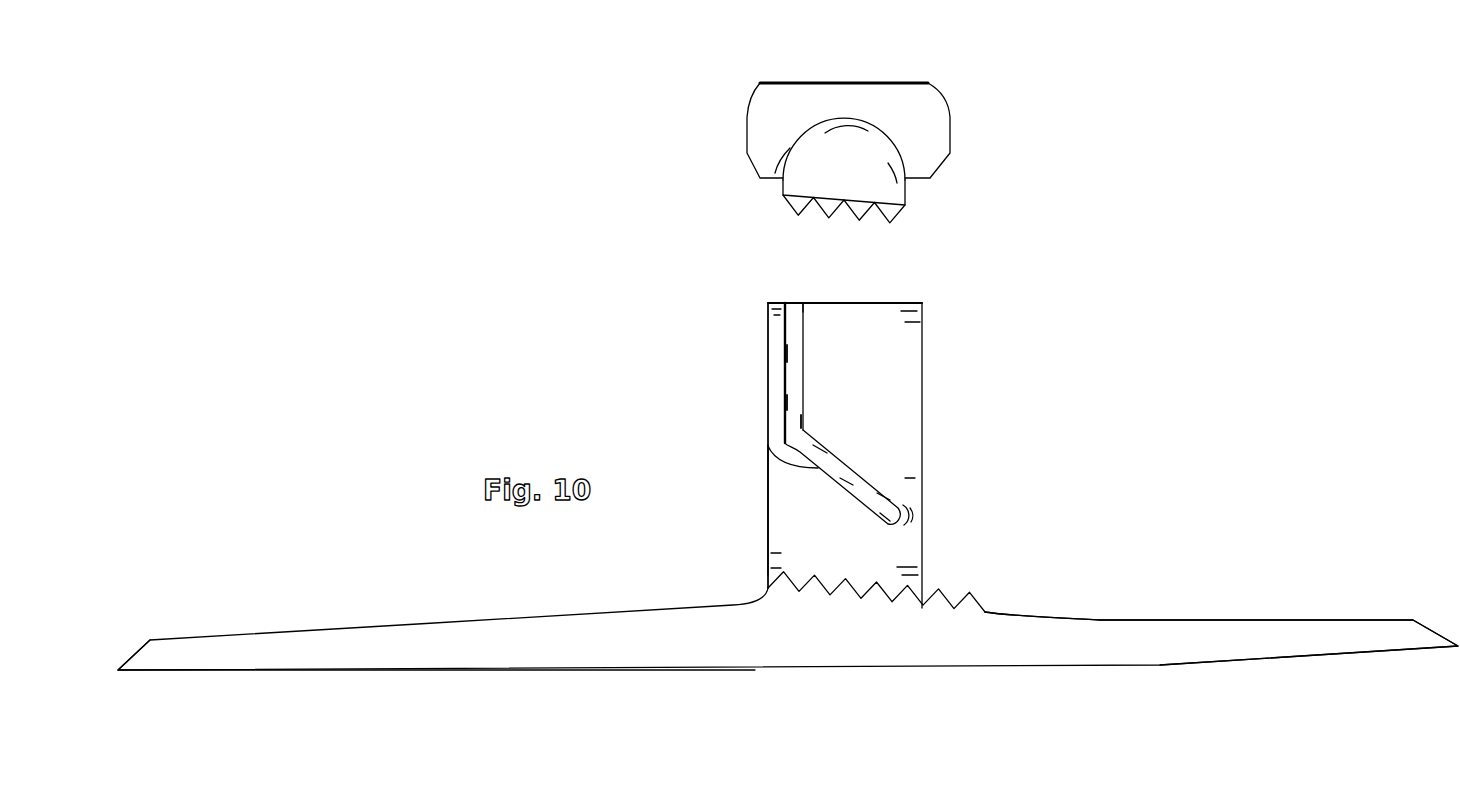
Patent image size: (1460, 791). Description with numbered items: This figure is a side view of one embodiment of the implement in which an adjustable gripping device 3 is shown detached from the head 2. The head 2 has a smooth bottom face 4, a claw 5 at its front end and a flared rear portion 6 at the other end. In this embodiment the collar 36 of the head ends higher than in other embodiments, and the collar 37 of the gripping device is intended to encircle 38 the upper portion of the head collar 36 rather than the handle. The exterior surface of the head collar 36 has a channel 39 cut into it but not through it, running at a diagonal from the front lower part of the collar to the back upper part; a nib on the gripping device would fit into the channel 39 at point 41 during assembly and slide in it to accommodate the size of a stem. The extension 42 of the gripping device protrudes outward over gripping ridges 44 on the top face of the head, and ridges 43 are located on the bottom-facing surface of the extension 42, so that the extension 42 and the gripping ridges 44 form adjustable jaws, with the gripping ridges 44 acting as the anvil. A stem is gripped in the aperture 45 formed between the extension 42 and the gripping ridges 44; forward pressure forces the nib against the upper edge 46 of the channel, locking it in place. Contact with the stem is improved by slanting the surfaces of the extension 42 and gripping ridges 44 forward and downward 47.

The head 2 is at (1082, 421).
The gripping device 3 is at (996, 142).
The smooth bottom face 4 is at (851, 717).
The claw 5 is at (995, 597).
The flared rear portion 6 is at (122, 680).
The collar of the head 36 is at (755, 367).
The collar of the gripping device 37 is at (890, 103).
The encircling 38 is at (838, 321).
The channel 39 is at (795, 388).
The point 41 is at (795, 297).
The extension 42 is at (905, 193).
The ridges 43 is at (788, 203).
The gripping ridges 44 is at (840, 560).
The aperture 45 is at (763, 452).
The upper edge of the channel 46 is at (836, 460).
The forward and downward slant 47 is at (768, 441).